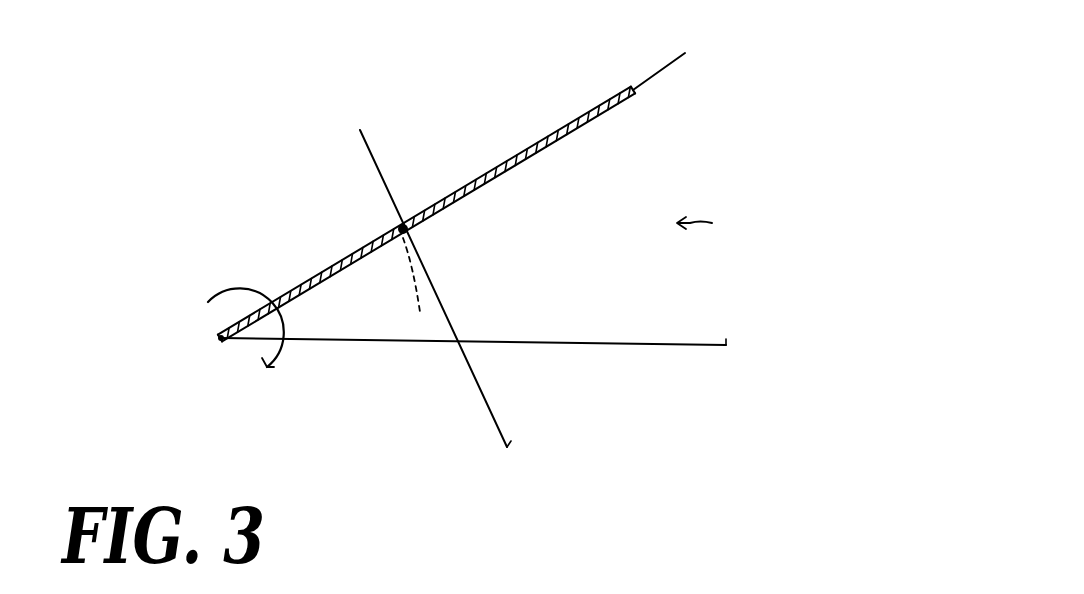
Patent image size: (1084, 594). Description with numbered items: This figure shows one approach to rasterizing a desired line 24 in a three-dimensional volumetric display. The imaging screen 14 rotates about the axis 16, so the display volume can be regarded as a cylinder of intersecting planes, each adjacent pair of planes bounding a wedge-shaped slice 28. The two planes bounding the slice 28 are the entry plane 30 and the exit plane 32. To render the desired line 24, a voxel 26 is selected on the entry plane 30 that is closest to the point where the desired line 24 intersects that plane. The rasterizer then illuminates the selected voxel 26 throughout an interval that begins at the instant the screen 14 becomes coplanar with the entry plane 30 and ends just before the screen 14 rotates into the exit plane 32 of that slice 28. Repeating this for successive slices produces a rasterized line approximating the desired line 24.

The imaging screen 14 is at (562, 124).
The axis 16 is at (215, 342).
The desired line 24 is at (500, 418).
The voxel 26 is at (398, 226).
The slice 28 is at (720, 225).
The entry plane 30 is at (667, 59).
The exit plane 32 is at (720, 338).